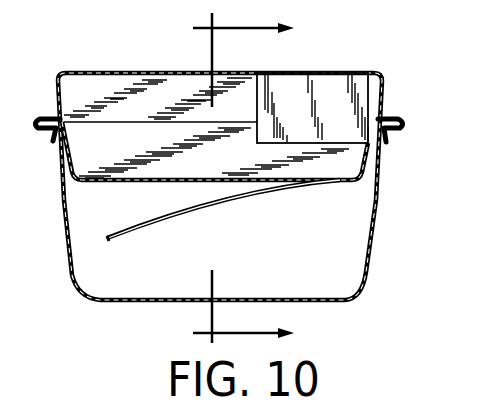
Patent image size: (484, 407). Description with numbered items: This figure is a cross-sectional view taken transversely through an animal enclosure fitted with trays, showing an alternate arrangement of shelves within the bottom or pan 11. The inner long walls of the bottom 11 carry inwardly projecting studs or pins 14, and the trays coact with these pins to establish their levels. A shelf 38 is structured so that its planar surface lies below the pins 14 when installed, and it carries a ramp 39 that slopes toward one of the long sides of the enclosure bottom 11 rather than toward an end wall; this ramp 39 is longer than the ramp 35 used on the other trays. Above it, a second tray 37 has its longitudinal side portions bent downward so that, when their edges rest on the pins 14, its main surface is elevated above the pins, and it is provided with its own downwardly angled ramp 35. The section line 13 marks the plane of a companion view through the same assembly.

The bottom 11 is at (360, 291).
The section line 13 is at (243, 178).
The studs 14 is at (54, 148).
The ramp 35 is at (330, 88).
The second tray 37 is at (113, 71).
The shelf 38 is at (340, 182).
The ramp 39 is at (123, 238).